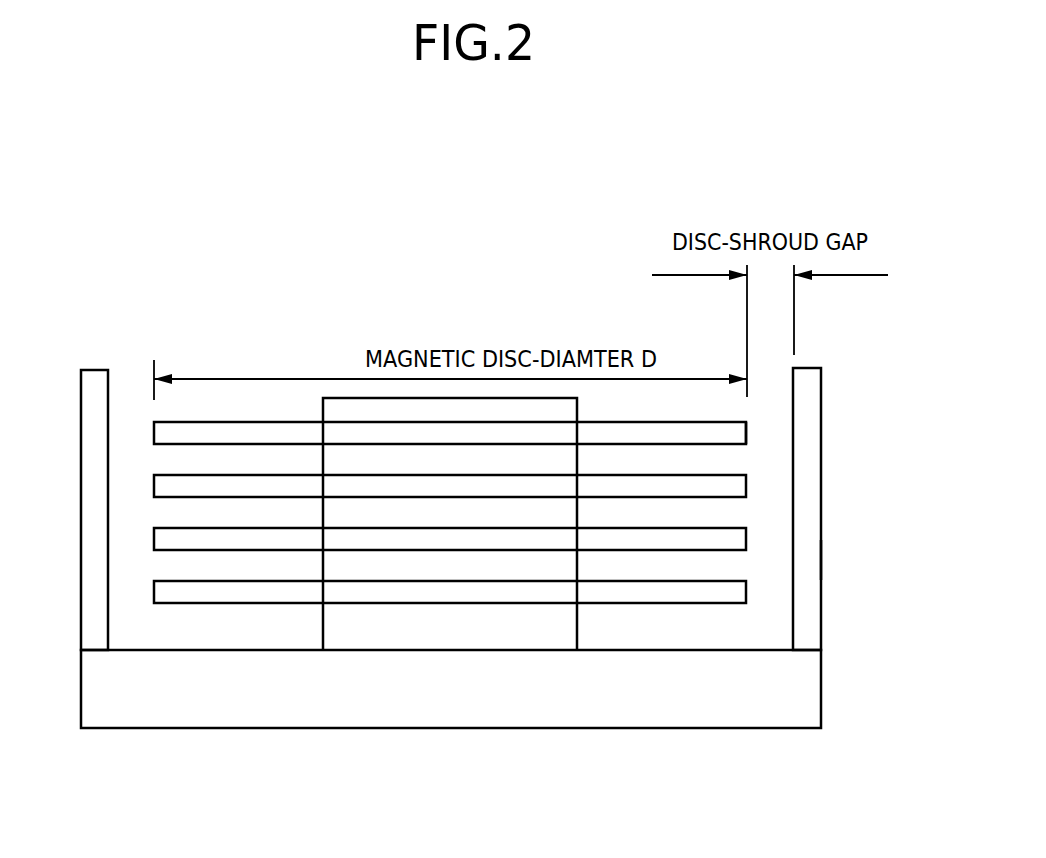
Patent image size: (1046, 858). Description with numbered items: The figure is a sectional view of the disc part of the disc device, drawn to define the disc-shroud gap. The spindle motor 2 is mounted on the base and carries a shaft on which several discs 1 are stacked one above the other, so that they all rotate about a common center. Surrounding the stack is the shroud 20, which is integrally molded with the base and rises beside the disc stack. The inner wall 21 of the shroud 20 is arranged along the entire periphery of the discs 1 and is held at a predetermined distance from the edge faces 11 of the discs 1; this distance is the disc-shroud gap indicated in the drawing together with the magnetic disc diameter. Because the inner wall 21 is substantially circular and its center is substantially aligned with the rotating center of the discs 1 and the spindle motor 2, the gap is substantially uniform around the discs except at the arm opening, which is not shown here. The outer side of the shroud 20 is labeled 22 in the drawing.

The disc 1 is at (670, 428).
The spindle motor 2 is at (349, 412).
The edge face 11 is at (747, 432).
The shroud 20 is at (805, 403).
The inner wall 21 is at (793, 573).
The shroud outer wall 22 is at (823, 559).